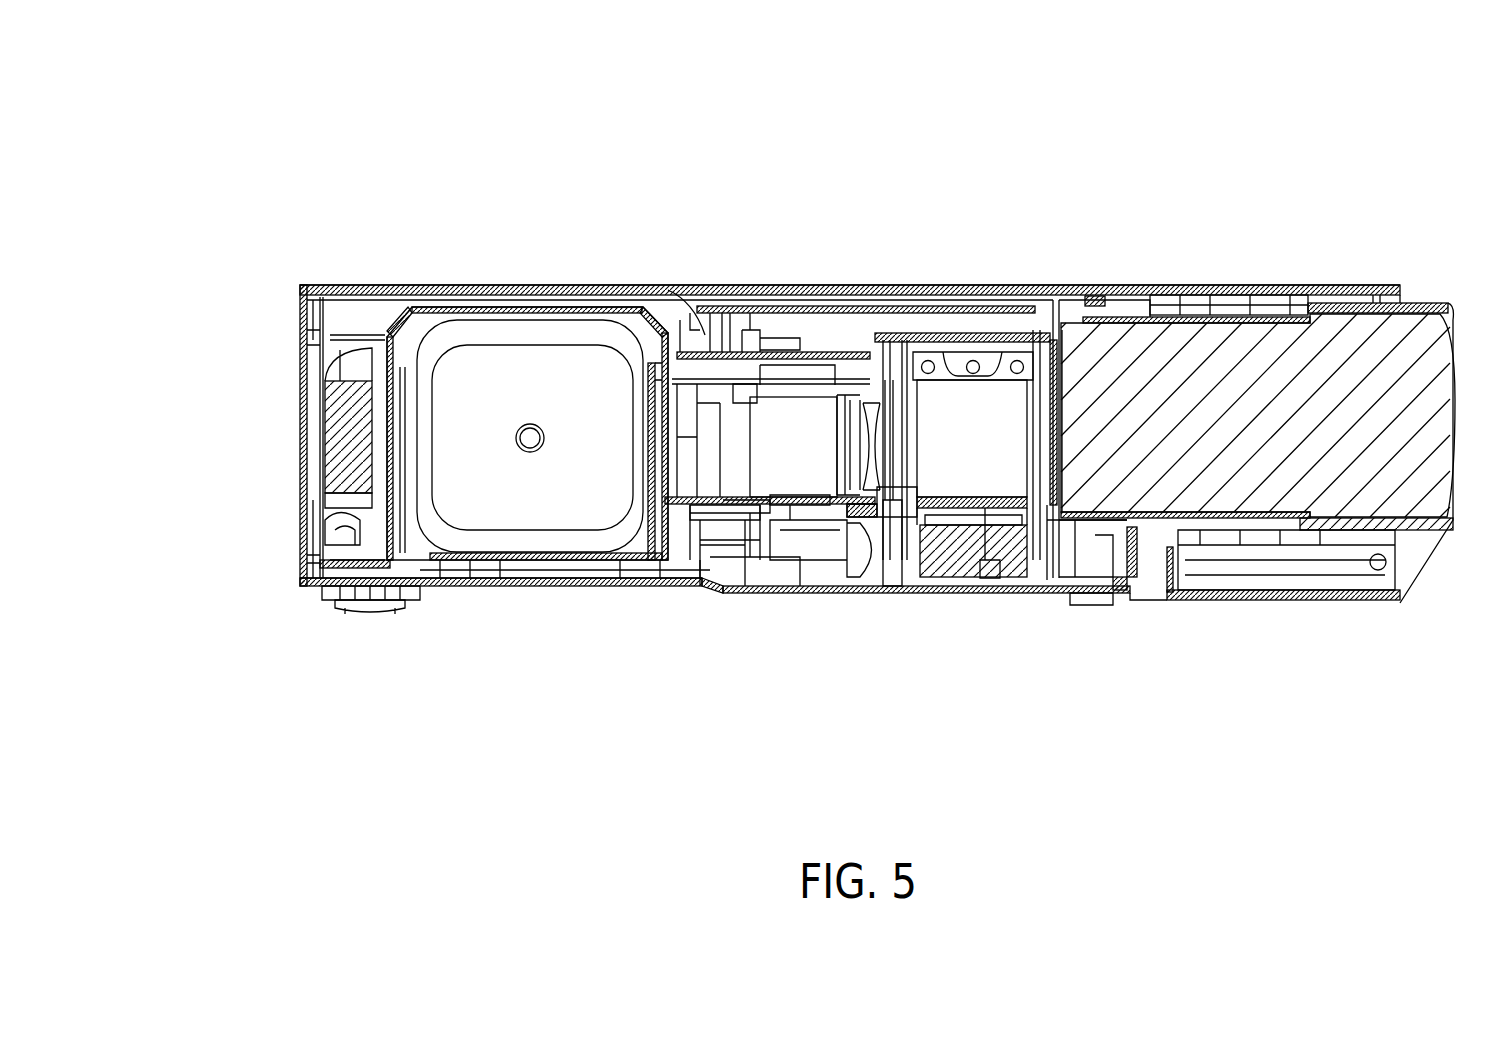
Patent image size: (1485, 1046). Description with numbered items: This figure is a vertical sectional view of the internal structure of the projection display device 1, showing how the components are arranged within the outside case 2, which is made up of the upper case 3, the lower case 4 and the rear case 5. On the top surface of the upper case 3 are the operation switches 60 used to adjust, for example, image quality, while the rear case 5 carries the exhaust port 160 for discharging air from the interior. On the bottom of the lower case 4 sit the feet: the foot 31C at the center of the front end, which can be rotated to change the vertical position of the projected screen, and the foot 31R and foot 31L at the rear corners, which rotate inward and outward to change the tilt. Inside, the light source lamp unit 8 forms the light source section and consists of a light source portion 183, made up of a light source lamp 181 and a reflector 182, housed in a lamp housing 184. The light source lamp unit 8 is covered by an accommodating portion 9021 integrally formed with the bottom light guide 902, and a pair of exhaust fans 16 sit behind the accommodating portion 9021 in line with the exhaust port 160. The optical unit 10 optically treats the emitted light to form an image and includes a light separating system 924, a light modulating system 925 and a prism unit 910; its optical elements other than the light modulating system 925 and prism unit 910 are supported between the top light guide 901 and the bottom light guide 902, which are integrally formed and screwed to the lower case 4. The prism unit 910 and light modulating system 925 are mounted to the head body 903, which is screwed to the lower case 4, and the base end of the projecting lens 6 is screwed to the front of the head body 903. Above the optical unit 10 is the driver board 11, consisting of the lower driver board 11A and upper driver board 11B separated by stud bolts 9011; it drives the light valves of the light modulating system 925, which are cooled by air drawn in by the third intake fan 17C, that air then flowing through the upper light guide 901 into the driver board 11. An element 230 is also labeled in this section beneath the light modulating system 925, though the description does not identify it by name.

The projection display device 1 is at (282, 211).
The outside case 2 is at (261, 623).
The upper case 3 is at (350, 285).
The lower case 4 is at (315, 600).
The rear case 5 is at (300, 563).
The projecting lens 6 is at (1410, 345).
The light source lamp unit 8 is at (543, 300).
The optical unit 10 is at (818, 335).
The driver board 11 is at (778, 304).
The lower driver board 11A is at (727, 390).
The upper driver board 11B is at (765, 380).
The exhaust fans 16 is at (340, 453).
The exhaust port 160 is at (298, 418).
The third intake fan 17C is at (983, 580).
The foot 31L is at (399, 651).
The foot 31R is at (365, 612).
The foot 31C is at (1245, 605).
The operation switches 60 is at (1288, 290).
The light source lamp 181 is at (523, 455).
The reflector 182 is at (585, 510).
The light source portion 183 is at (537, 523).
The lamp housing 184 is at (630, 585).
The image sensor 230 is at (894, 513).
The top light guide 901 is at (790, 375).
The bottom light guide 902 is at (770, 610).
The head body 903 is at (1045, 560).
The stud bolts 9011 is at (670, 300).
The accommodating portion 9021 is at (425, 300).
The prism unit 910 is at (1010, 480).
The light separating system 924 is at (801, 482).
The light modulating system 925 is at (968, 570).